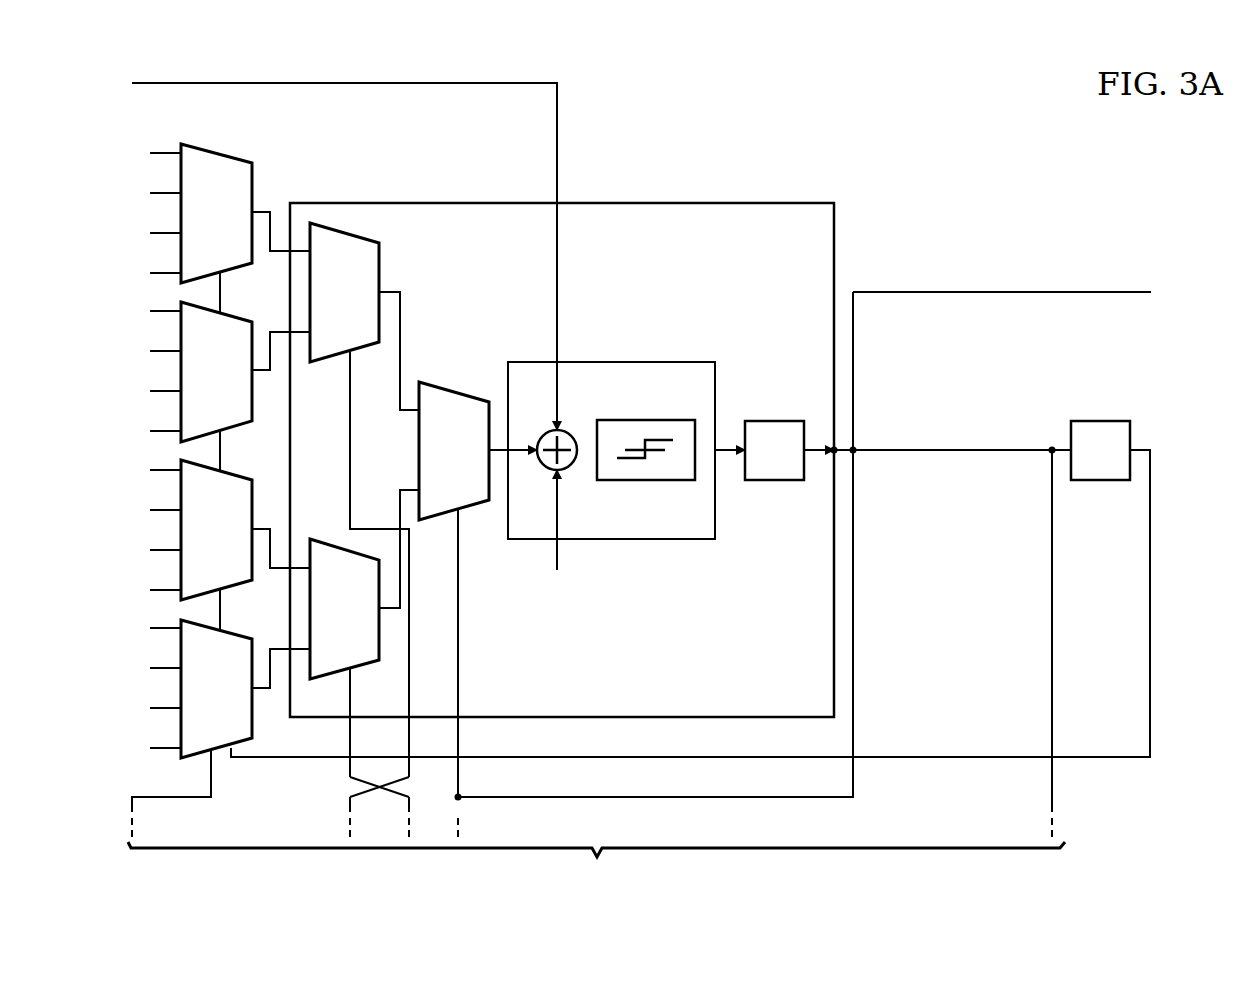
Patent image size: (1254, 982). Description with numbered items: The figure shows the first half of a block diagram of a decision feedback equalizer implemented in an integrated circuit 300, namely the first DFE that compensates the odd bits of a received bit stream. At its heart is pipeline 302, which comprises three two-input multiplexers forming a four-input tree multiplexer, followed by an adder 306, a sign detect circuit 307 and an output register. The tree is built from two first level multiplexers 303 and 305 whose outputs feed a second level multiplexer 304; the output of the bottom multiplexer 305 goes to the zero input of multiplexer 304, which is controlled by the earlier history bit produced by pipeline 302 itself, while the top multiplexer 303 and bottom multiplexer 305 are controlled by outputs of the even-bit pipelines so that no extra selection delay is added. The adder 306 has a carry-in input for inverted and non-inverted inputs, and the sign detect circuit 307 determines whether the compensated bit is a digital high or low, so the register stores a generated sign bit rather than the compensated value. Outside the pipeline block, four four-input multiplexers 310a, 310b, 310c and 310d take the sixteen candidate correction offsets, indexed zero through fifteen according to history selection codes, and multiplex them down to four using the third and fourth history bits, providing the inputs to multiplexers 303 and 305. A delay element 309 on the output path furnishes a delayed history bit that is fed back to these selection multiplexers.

The DFE-comprising integrated circuit 300 is at (962, 143).
The pipeline 302 is at (794, 202).
The multiplexer 303 is at (364, 303).
The multiplexer 304 is at (473, 461).
The multiplexer 305 is at (364, 618).
The adder 306 is at (568, 466).
The sign detect circuit 307 is at (655, 481).
The delay element 309 is at (1100, 420).
The multiplexer 310a is at (241, 224).
The multiplexer 310b is at (241, 382).
The multiplexer 310c is at (241, 541).
The multiplexer 310d is at (241, 700).